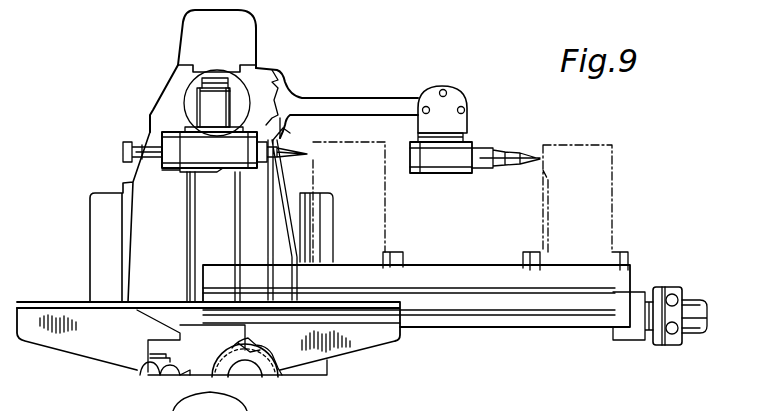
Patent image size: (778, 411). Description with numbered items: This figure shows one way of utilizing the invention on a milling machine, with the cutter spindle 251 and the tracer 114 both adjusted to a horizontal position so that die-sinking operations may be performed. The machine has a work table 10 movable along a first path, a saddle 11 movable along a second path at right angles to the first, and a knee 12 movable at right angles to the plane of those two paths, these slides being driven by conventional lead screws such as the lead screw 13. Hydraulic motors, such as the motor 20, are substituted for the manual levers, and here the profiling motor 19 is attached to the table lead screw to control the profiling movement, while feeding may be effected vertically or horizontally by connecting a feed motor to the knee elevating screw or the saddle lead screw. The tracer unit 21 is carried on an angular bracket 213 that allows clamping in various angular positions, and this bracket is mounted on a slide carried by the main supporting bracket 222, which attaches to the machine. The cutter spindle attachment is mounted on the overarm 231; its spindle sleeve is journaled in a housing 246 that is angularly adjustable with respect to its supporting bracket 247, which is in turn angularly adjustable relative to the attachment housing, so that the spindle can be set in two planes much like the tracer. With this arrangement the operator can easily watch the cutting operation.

The work table 10 is at (468, 278).
The saddle 11 is at (72, 340).
The knee 12 is at (128, 300).
The lead screw 13 is at (137, 370).
The profiling motor 19 is at (672, 340).
The hydraulic motor 20 is at (283, 370).
The tracer unit 21 is at (453, 158).
The tracer 114 is at (515, 153).
The angular bracket 213 is at (453, 103).
The main supporting bracket 222 is at (357, 103).
The overarm 231 is at (241, 43).
The housing 246 is at (170, 148).
The bracket 247 is at (203, 105).
The cutter spindle 251 is at (294, 140).